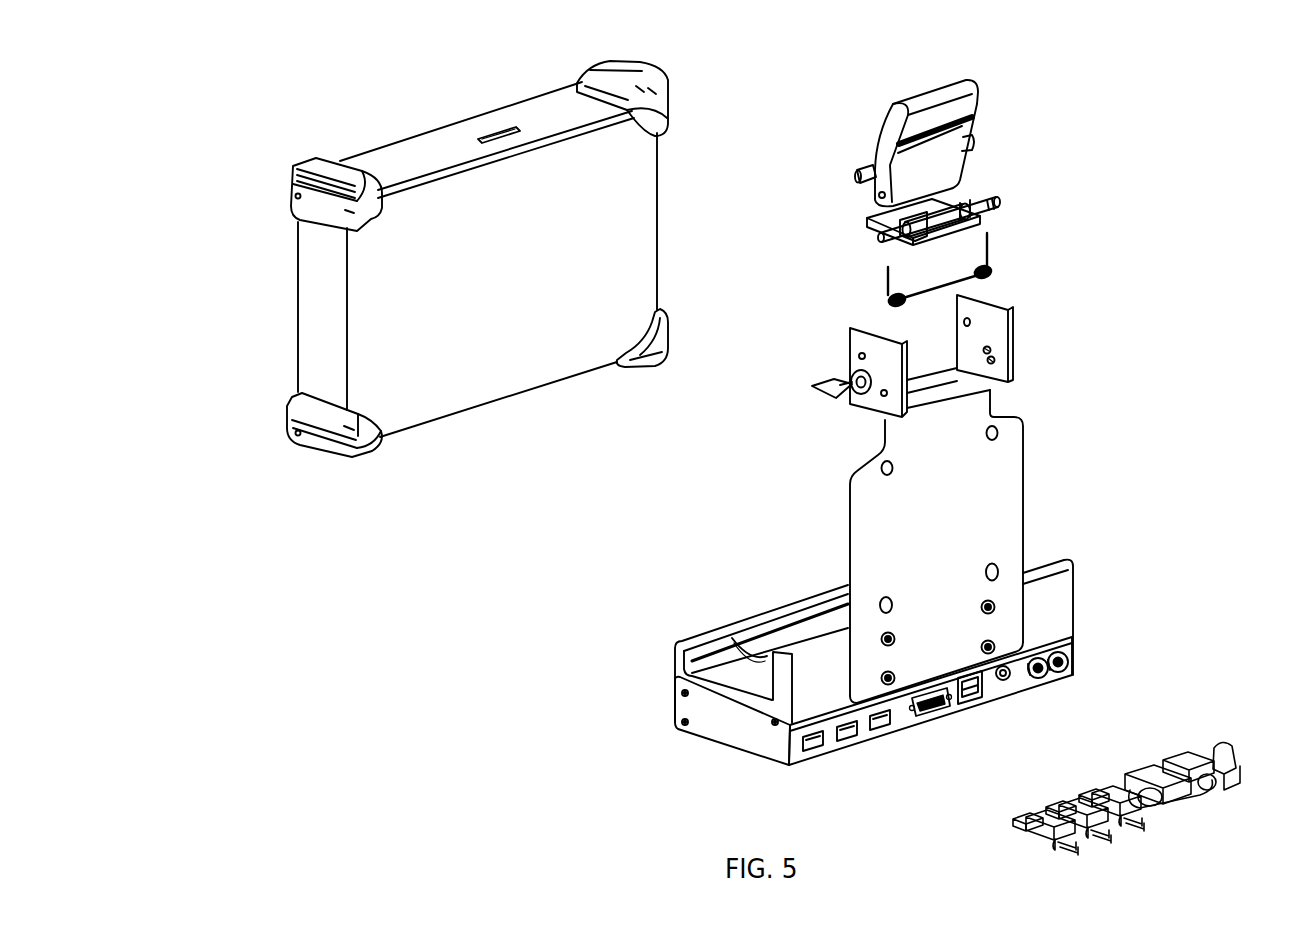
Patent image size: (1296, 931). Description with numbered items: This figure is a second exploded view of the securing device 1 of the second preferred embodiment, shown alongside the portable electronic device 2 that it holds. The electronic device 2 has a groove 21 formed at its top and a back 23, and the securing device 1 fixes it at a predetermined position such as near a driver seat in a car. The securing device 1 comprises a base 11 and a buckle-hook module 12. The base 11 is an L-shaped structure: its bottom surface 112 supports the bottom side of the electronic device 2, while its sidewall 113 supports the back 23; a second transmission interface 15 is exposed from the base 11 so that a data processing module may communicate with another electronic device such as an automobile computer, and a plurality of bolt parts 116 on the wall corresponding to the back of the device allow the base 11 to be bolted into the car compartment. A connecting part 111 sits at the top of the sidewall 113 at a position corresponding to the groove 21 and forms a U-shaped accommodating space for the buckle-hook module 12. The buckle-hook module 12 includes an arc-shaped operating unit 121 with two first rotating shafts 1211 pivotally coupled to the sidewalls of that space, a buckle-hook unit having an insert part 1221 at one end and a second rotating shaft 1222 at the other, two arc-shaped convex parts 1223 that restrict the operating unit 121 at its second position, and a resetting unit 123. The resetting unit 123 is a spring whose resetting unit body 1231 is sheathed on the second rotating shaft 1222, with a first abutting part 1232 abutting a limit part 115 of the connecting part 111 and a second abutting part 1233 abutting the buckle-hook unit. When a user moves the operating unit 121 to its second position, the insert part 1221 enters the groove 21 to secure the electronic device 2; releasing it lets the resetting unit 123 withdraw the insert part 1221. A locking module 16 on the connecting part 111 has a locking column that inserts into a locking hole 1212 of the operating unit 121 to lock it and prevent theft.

The securing device 1 is at (813, 128).
The electronic device 2 is at (285, 122).
The groove 21 is at (496, 130).
The back 23 is at (492, 378).
The base 11 is at (772, 745).
The bottom surface 112 is at (767, 645).
The sidewall 113 is at (1003, 490).
The connecting part 111 is at (995, 327).
The limit part 115 is at (997, 356).
The bolt parts 116 is at (882, 600).
The locking module 16 is at (813, 385).
The second transmission interface 15 is at (917, 714).
The buckle-hook module 12 is at (1200, 154).
The operating unit 121 is at (977, 97).
The first rotating shaft 1211 is at (973, 143).
The locking hole 1212 is at (857, 180).
The insert part 1221 is at (877, 218).
The second rotating shaft 1222 is at (997, 201).
The convex parts 1223 is at (897, 227).
The resetting unit 123 is at (1150, 217).
The resetting unit body 1231 is at (992, 272).
The first abutting part 1232 is at (990, 240).
The second abutting part 1233 is at (967, 283).